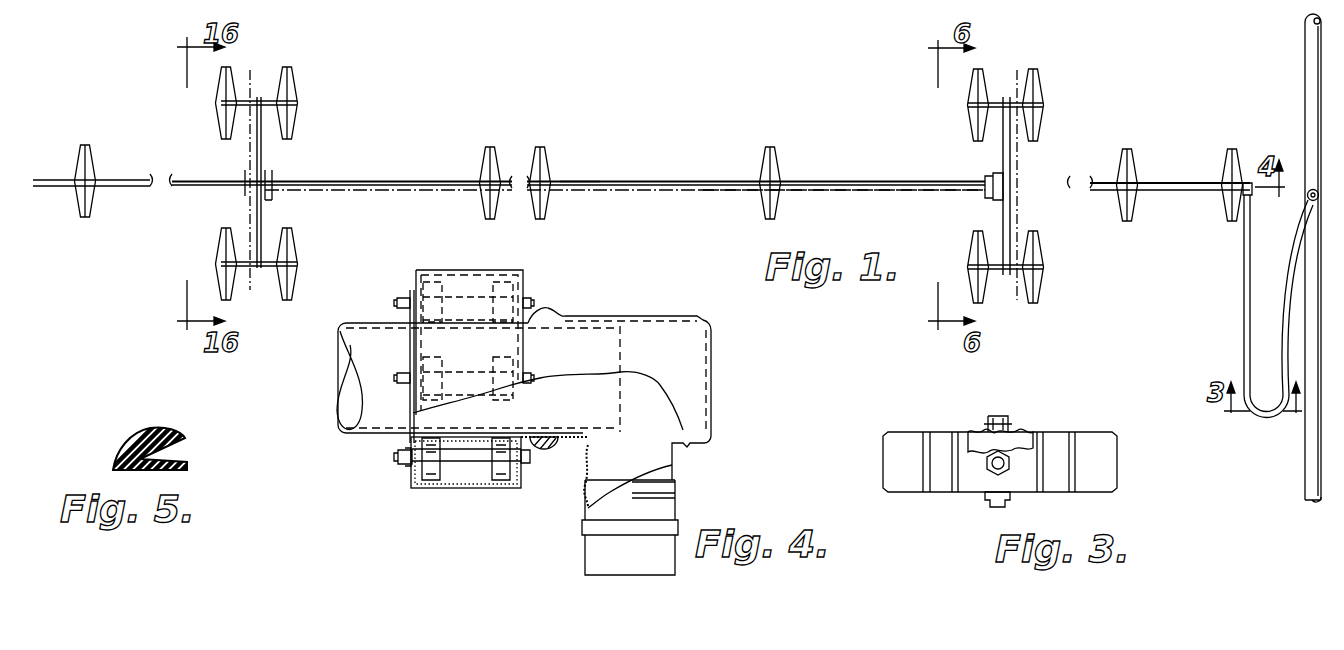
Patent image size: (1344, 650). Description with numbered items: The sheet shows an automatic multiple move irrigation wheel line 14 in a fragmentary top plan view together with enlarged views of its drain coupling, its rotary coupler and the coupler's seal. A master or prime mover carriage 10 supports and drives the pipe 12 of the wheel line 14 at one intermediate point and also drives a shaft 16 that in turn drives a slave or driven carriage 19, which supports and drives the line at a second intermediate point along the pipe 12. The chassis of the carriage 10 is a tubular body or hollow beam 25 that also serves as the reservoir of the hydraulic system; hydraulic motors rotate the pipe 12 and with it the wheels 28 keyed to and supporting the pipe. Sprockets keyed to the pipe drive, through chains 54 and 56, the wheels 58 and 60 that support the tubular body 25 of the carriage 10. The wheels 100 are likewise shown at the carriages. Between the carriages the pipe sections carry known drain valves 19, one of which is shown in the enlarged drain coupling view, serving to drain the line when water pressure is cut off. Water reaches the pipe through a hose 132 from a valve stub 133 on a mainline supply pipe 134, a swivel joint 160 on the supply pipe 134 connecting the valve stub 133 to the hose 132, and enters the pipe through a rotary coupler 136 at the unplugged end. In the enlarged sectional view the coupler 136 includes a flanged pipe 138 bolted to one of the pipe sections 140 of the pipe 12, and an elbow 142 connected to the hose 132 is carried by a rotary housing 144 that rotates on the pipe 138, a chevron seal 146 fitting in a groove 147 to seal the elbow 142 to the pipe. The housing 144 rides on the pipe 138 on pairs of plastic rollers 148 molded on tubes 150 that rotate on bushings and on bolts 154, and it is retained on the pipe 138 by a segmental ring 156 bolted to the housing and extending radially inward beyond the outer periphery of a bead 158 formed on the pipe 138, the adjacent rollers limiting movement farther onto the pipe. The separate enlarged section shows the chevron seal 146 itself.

In FIG. 1, the master or prime mover carriage 10 is at (1075, 113).
In FIG. 1, the pipe 12 is at (922, 181).
In FIG. 4, the pipe 12 is at (347, 293).
In FIG. 1, the wheel line 14 is at (578, 133).
In FIG. 1, the shaft 16 is at (900, 192).
In FIG. 1, the slave or driven carriage 19 is at (315, 125).
In FIG. 3, the slave or driven carriage 19 is at (1030, 432).
In FIG. 1, the tubular body or hollow beam 25 is at (990, 205).
In FIG. 1, the wheels 28 is at (540, 148).
In FIG. 1, the chain 54 is at (1018, 153).
In FIG. 1, the chain 56 is at (1022, 208).
In FIG. 1, the wheel 58 is at (1035, 68).
In FIG. 1, the wheel 60 is at (1035, 305).
In FIG. 1, the wheels 100 is at (290, 65).
In FIG. 1, the hose 132 is at (1247, 285).
In FIG. 1, the valve stub 133 is at (1308, 180).
In FIG. 1, the mainline supply pipe 134 is at (1307, 76).
In FIG. 1, the rotary coupler 136 is at (1258, 205).
In FIG. 4, the rotary coupler 136 is at (573, 290).
In FIG. 4, the flanged pipe 138 is at (435, 480).
In FIG. 4, the pipe section 140 is at (352, 357).
In FIG. 4, the elbow 142 is at (713, 355).
In FIG. 4, the rotary housing 144 is at (523, 277).
In FIG. 4, the chevron seal 146 is at (553, 443).
In FIG. 5, the chevron seal 146 is at (160, 436).
In FIG. 4, the groove 147 is at (543, 450).
In FIG. 4, the plastic rollers 148 is at (430, 275).
In FIG. 4, the tubes 150 is at (478, 290).
In FIG. 4, the bolts 154 is at (405, 465).
In FIG. 4, the segmental ring 156 is at (410, 465).
In FIG. 4, the bead 158 is at (392, 435).
In FIG. 1, the swivel joint 160 is at (1310, 192).